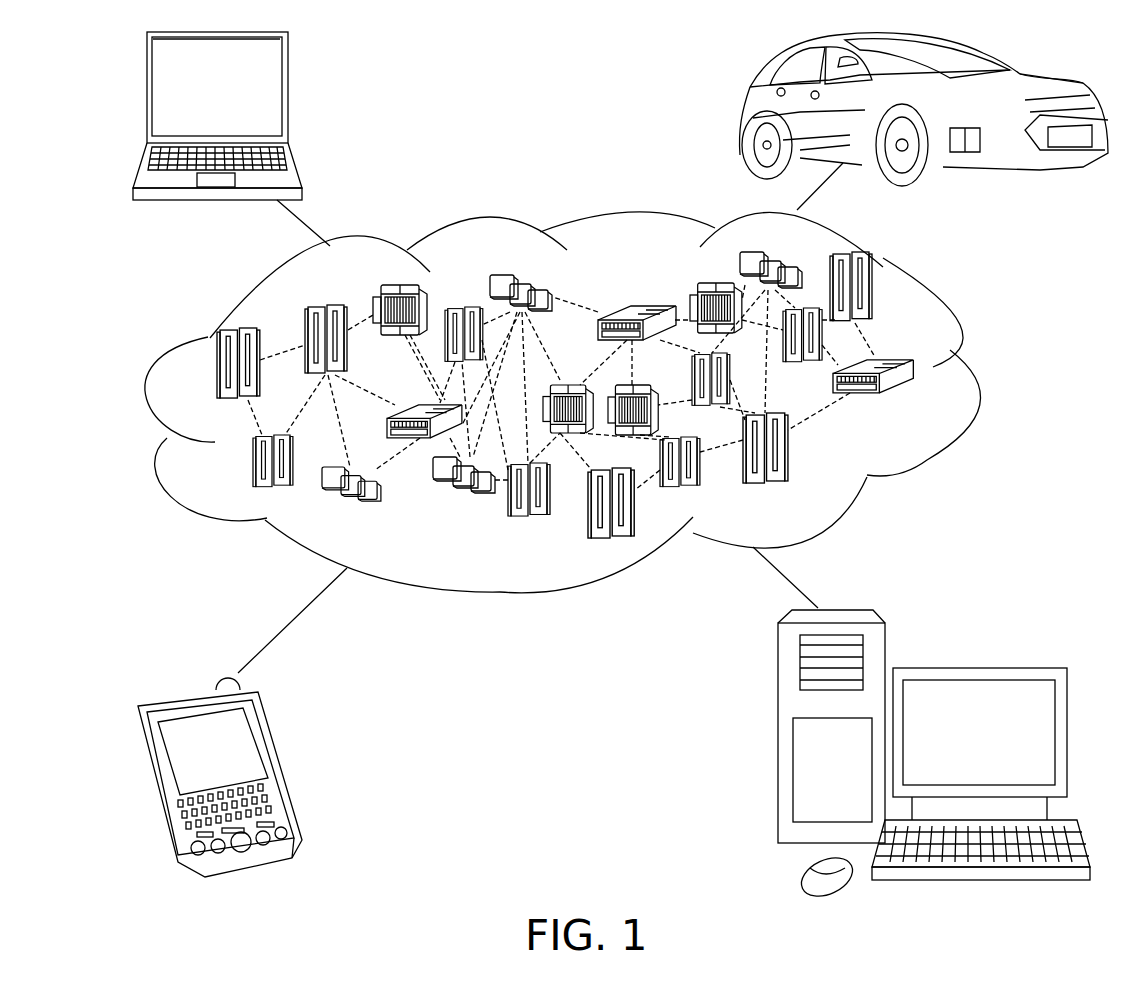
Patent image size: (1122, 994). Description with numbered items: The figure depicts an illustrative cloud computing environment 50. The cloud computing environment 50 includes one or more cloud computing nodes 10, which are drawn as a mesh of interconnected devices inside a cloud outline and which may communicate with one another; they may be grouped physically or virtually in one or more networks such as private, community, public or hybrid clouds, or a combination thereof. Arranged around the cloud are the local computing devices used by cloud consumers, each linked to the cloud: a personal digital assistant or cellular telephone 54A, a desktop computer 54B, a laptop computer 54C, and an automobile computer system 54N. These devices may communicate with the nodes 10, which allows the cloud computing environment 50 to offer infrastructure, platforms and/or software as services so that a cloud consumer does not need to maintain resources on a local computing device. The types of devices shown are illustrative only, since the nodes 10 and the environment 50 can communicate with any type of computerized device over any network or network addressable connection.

The cloud computing nodes 10 is at (915, 405).
The cloud computing environment 50 is at (975, 373).
The personal digital assistant (PDA) or cellular telephone 54A is at (277, 765).
The desktop computer 54B is at (975, 667).
The laptop computer 54C is at (290, 97).
The automobile computer system 54N is at (745, 112).